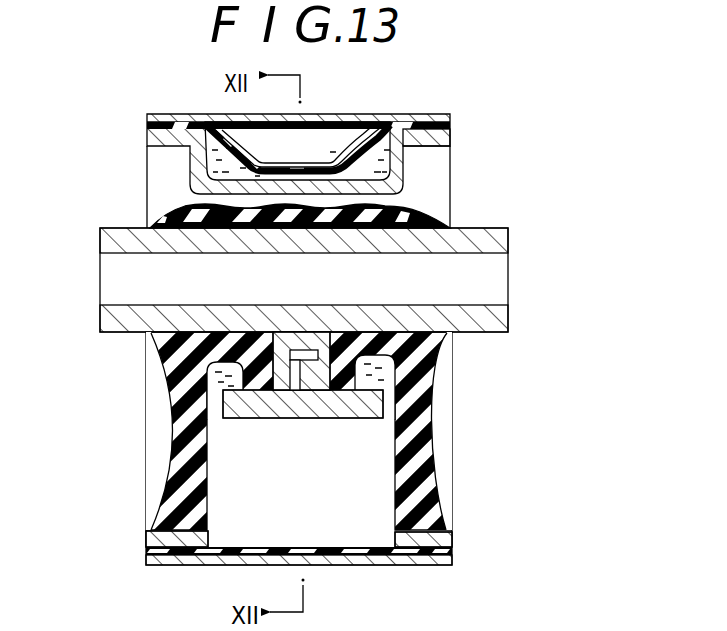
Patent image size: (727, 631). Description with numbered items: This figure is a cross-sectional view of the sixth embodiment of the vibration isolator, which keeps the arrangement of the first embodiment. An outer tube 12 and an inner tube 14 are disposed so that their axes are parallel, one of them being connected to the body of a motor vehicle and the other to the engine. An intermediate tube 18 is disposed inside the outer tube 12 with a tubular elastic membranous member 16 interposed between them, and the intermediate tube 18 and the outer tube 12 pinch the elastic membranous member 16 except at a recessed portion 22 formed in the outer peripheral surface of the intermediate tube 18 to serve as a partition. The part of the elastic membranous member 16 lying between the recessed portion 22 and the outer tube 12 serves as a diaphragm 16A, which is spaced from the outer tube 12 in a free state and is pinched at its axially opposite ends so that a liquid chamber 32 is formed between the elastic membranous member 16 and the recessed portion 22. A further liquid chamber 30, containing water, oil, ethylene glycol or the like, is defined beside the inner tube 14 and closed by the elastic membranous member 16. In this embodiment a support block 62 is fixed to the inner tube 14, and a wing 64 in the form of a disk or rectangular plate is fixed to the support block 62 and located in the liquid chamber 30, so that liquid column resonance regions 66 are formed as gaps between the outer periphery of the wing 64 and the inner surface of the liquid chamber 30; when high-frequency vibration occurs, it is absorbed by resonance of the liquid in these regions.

The outer tube 12 is at (171, 122).
The diaphragm 16A is at (298, 177).
The intermediate tube 18 is at (443, 138).
The recessed portion 22 is at (252, 190).
The liquid chamber 32 is at (368, 158).
The inner tube 14 is at (470, 227).
The support block 62 is at (322, 338).
The liquid column resonance regions 66 is at (217, 393).
The liquid chamber 30 is at (298, 438).
The wing 64 is at (275, 423).
The elastic membranous member 16 is at (363, 315).